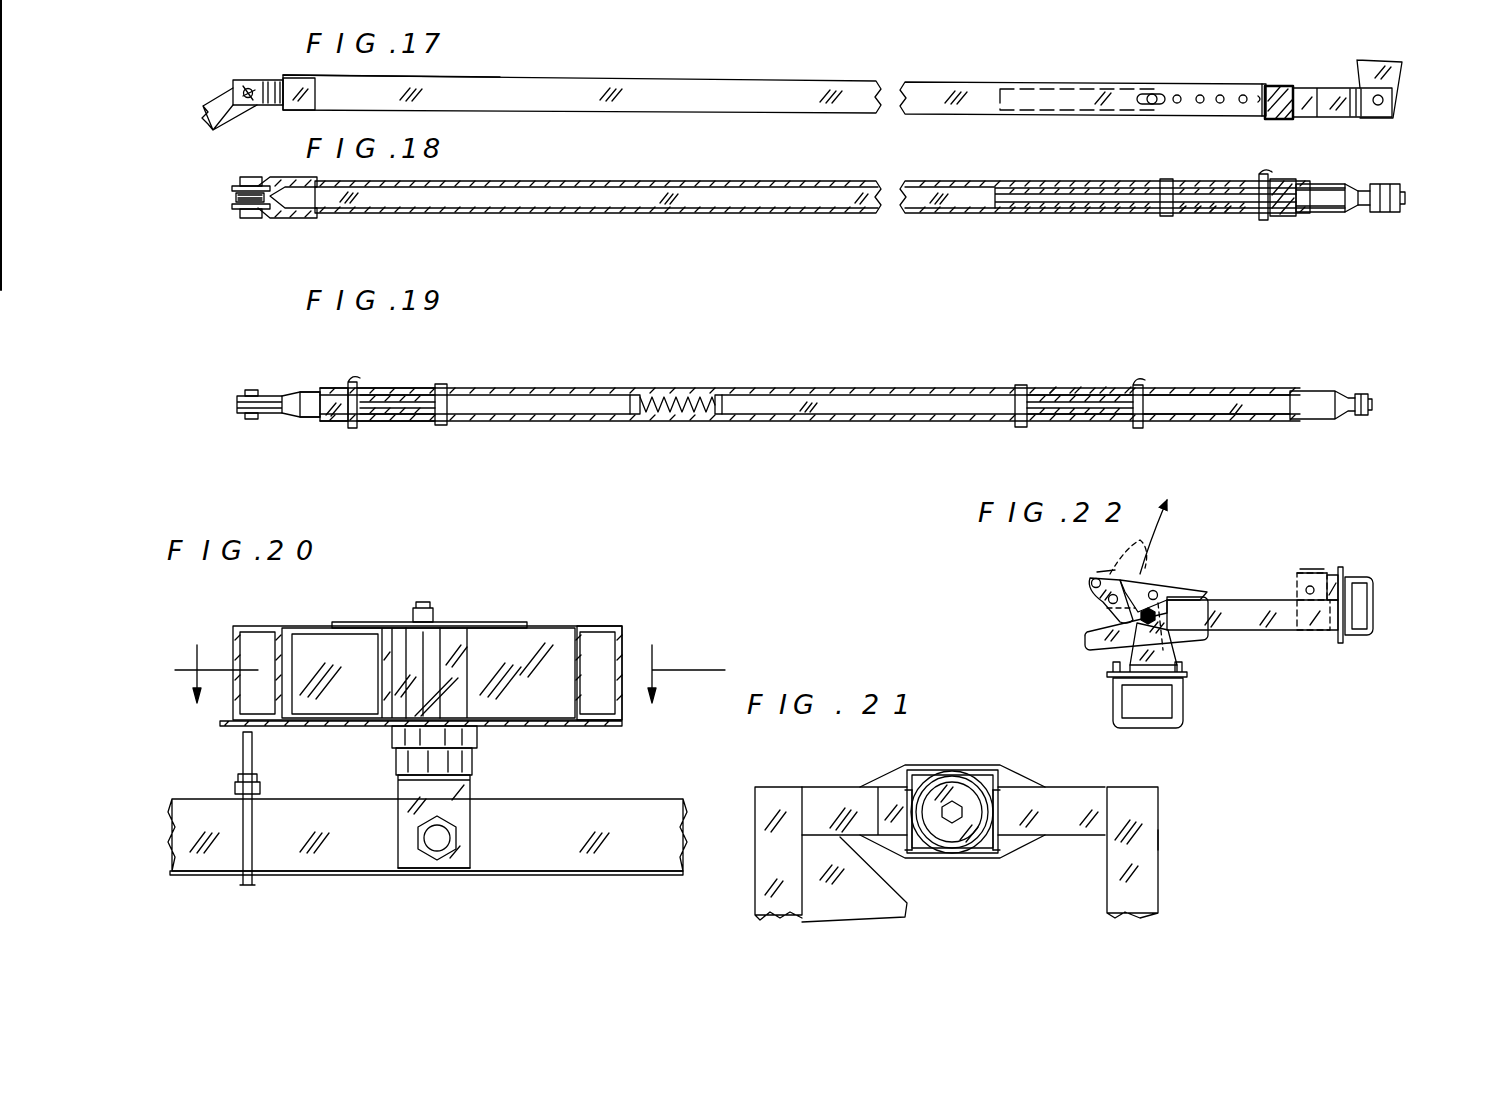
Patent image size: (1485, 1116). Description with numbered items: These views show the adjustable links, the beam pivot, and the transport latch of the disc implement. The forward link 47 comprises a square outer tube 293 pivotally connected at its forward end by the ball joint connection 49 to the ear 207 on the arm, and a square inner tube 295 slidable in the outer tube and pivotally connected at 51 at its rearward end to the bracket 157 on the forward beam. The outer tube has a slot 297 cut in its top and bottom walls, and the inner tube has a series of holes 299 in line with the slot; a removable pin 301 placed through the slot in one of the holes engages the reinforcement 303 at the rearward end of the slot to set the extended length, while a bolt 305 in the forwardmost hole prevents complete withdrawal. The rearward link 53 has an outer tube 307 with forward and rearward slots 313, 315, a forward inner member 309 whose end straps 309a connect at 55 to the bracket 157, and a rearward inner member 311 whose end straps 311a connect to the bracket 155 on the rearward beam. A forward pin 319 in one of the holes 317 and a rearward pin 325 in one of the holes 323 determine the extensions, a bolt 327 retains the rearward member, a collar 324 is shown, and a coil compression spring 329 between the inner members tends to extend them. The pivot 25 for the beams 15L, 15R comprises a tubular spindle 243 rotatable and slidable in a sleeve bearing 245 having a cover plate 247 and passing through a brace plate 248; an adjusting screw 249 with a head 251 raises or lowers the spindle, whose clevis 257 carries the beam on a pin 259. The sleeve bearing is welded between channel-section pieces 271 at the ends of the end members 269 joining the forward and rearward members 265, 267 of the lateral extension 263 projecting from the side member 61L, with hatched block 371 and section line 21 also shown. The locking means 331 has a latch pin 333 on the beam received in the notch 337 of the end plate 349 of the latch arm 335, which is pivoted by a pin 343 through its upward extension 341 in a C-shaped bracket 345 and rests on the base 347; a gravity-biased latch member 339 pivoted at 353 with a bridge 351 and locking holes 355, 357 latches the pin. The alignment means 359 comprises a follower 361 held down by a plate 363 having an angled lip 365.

In FIG. 17, the forward link 47 is at (720, 114).
In FIG. 17, the pivotal connection 49 is at (248, 88).
In FIG. 18, the pivotal connection 49 is at (250, 177).
In FIG. 17, the pivotal connection 51 is at (1385, 104).
In FIG. 18, the pivotal connection 51 is at (1382, 184).
In FIG. 19, the rearward link 53 is at (766, 388).
In FIG. 19, the pivotal connection 55 is at (246, 392).
In FIG. 19, the bracket 155 is at (1395, 435).
In FIG. 17, the bracket 157 is at (1395, 78).
In FIG. 18, the bracket 157 is at (1395, 199).
In FIG. 19, the bracket 157 is at (240, 404).
In FIG. 17, the ear 207 is at (212, 98).
In FIG. 18, the ear 207 is at (236, 198).
In FIG. 17, the outer tube 293 is at (712, 92).
In FIG. 18, the outer tube 293 is at (578, 214).
In FIG. 17, the inner tube 295 is at (1315, 86).
In FIG. 18, the inner tube 295 is at (1000, 199).
In FIG. 17, the slot 297 is at (1192, 100).
In FIG. 18, the slot 297 is at (1205, 195).
In FIG. 17, the holes 299 is at (1243, 94).
In FIG. 18, the holes 299 is at (1245, 214).
In FIG. 17, the pin 301 is at (1262, 93).
In FIG. 18, the pin 301 is at (1263, 220).
In FIG. 17, the reinforcement 303 is at (1282, 119).
In FIG. 18, the reinforcement 303 is at (1283, 179).
In FIG. 17, the bolt 305 is at (1150, 105).
In FIG. 18, the bolt 305 is at (1165, 216).
In FIG. 19, the outer tube 307 is at (633, 422).
In FIG. 19, the forward inner member 309 is at (312, 418).
In FIG. 19, the end straps 309a is at (298, 390).
In FIG. 19, the rearward inner member 311 is at (1255, 422).
In FIG. 19, the end straps 311a is at (1305, 392).
In FIG. 19, the forward slot 313 is at (452, 394).
In FIG. 19, the rearward slot 315 is at (1118, 394).
In FIG. 19, the holes 317 is at (420, 388).
In FIG. 19, the forward pin 319 is at (353, 428).
In FIG. 19, the holes 323 is at (1110, 388).
In FIG. 19, the collar 324 is at (440, 426).
In FIG. 19, the rearward pin 325 is at (1138, 429).
In FIG. 19, the bolt 327 is at (1020, 428).
In FIG. 19, the coil compression spring 329 is at (672, 416).
In FIG. 20, the right forward beam 15R is at (583, 873).
In FIG. 22, the left forward beam 15L is at (1178, 712).
In FIG. 20, the section line 21 is at (446, 671).
In FIG. 20, the pivot 25 is at (436, 872).
In FIG. 22, the left side member 61L is at (1376, 607).
In FIG. 20, the tubular spindle 243 is at (474, 760).
In FIG. 21, the tubular spindle 243 is at (995, 782).
In FIG. 20, the sleeve bearing 245 is at (238, 626).
In FIG. 21, the sleeve bearing 245 is at (950, 775).
In FIG. 20, the cover plate 247 is at (512, 621).
In FIG. 20, the brace plate 248 is at (530, 727).
In FIG. 21, the brace plate 248 is at (895, 852).
In FIG. 21, the adjusting screw 249 is at (962, 812).
In FIG. 20, the head 251 is at (438, 608).
In FIG. 20, the clevis 257 is at (472, 838).
In FIG. 20, the pin 259 is at (420, 835).
In FIG. 21, the lateral extension 263 is at (1165, 841).
In FIG. 20, the forward member 265 is at (426, 873).
In FIG. 21, the forward member 265 is at (760, 892).
In FIG. 20, the rearward member 267 is at (620, 706).
In FIG. 21, the rearward member 267 is at (1150, 895).
In FIG. 20, the outer end members 269 is at (305, 626).
In FIG. 21, the outer end members 269 is at (818, 786).
In FIG. 20, the channel-section pieces 271 is at (462, 670).
In FIG. 21, the channel-section pieces 271 is at (920, 855).
In FIG. 22, the locking means 331 is at (1074, 578).
In FIG. 22, the latch pin 333 is at (1157, 610).
In FIG. 22, the latch arm 335 is at (1265, 633).
In FIG. 22, the notch 337 is at (1135, 627).
In FIG. 22, the latch member 339 is at (1140, 587).
In FIG. 22, the upward extension 341 is at (1297, 589).
In FIG. 22, the pin 343 is at (1312, 588).
In FIG. 22, the C-shaped bracket 345 is at (1332, 574).
In FIG. 22, the base 347 is at (1342, 645).
In FIG. 22, the outer end plate 349 is at (1185, 640).
In FIG. 22, the bridge 351 is at (1100, 559).
In FIG. 22, the pivot 353 is at (1088, 582).
In FIG. 22, the hole 355 is at (1118, 549).
In FIG. 22, the hole 357 is at (1108, 603).
In FIG. 20, the alignment means 359 is at (208, 739).
In FIG. 20, the follower 361 is at (243, 742).
In FIG. 20, the plate 363 is at (302, 727).
In FIG. 21, the plate 363 is at (840, 922).
In FIG. 20, the angled lip 365 is at (462, 698).
In FIG. 20, the block 371 is at (390, 670).